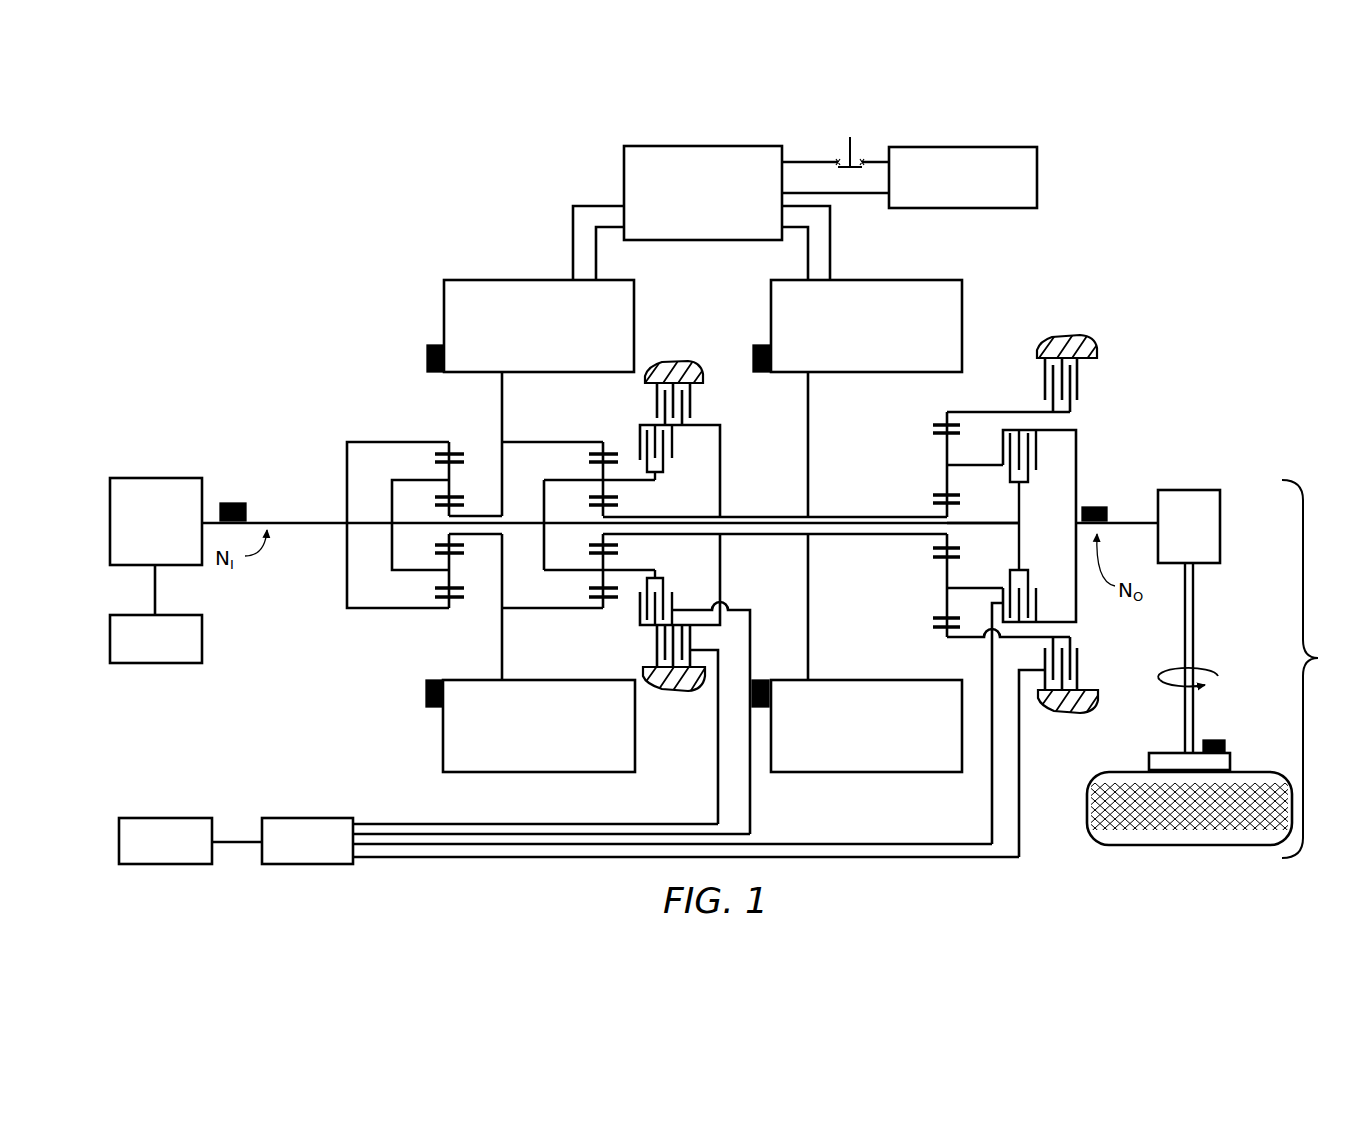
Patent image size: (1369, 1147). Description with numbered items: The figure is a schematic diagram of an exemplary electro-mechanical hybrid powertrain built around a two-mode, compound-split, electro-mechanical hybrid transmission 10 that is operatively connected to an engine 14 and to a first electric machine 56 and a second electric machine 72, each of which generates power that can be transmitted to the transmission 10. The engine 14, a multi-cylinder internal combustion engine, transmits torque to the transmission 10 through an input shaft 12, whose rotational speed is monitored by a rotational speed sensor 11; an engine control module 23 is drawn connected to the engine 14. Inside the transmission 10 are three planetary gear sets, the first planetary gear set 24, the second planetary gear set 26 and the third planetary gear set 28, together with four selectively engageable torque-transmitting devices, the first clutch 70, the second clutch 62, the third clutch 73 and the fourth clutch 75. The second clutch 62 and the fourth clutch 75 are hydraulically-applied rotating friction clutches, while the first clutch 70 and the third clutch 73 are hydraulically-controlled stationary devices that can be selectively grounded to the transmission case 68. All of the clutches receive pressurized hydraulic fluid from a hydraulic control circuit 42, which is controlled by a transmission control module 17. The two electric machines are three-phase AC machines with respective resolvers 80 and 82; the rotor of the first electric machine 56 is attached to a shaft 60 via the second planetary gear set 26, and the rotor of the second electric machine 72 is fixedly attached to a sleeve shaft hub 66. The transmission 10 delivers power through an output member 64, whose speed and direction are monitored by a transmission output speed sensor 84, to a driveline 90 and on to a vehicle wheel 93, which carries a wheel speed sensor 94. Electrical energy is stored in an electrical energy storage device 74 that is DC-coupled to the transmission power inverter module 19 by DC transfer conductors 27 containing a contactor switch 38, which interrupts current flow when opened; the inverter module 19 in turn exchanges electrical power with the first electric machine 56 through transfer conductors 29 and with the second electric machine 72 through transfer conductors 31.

The two-mode, compound-split, electro-mechanical hybrid transmission 10 is at (400, 240).
The rotational speed sensor 11 is at (232, 503).
The input shaft 12 is at (308, 522).
The engine 14 is at (160, 478).
The transmission control module 17 is at (155, 818).
The transmission power inverter module 19 is at (624, 163).
The engine control module 23 is at (202, 655).
The first planetary gear set 24 is at (438, 438).
The second planetary gear set 26 is at (598, 436).
The DC transfer conductors 27 is at (800, 160).
The third planetary gear set 28 is at (942, 410).
The transfer conductors 29 is at (573, 240).
The transfer conductors 31 is at (830, 236).
The contactor switch 38 is at (862, 140).
The hydraulic control circuit 42 is at (275, 818).
The first electric machine (MG-A) 56 is at (444, 310).
The shaft 60 is at (995, 523).
The clutch C2 62 is at (1042, 468).
The output member 64 is at (1128, 523).
The sleeve shaft hub 66 is at (842, 517).
The transmission case 68 is at (678, 362).
The clutch C1 70 is at (1030, 378).
The second electric machine (MG-B) 72 is at (962, 298).
The clutch C3 73 is at (700, 402).
The electrical energy storage device 74 is at (1037, 167).
The clutch C4 75 is at (678, 454).
The resolver 80 is at (427, 355).
The resolver 82 is at (760, 345).
The transmission output speed sensor 84 is at (1095, 507).
The driveline 90 is at (1318, 658).
The vehicle wheel 93 is at (1150, 762).
The wheel speed sensor 94 is at (1215, 740).